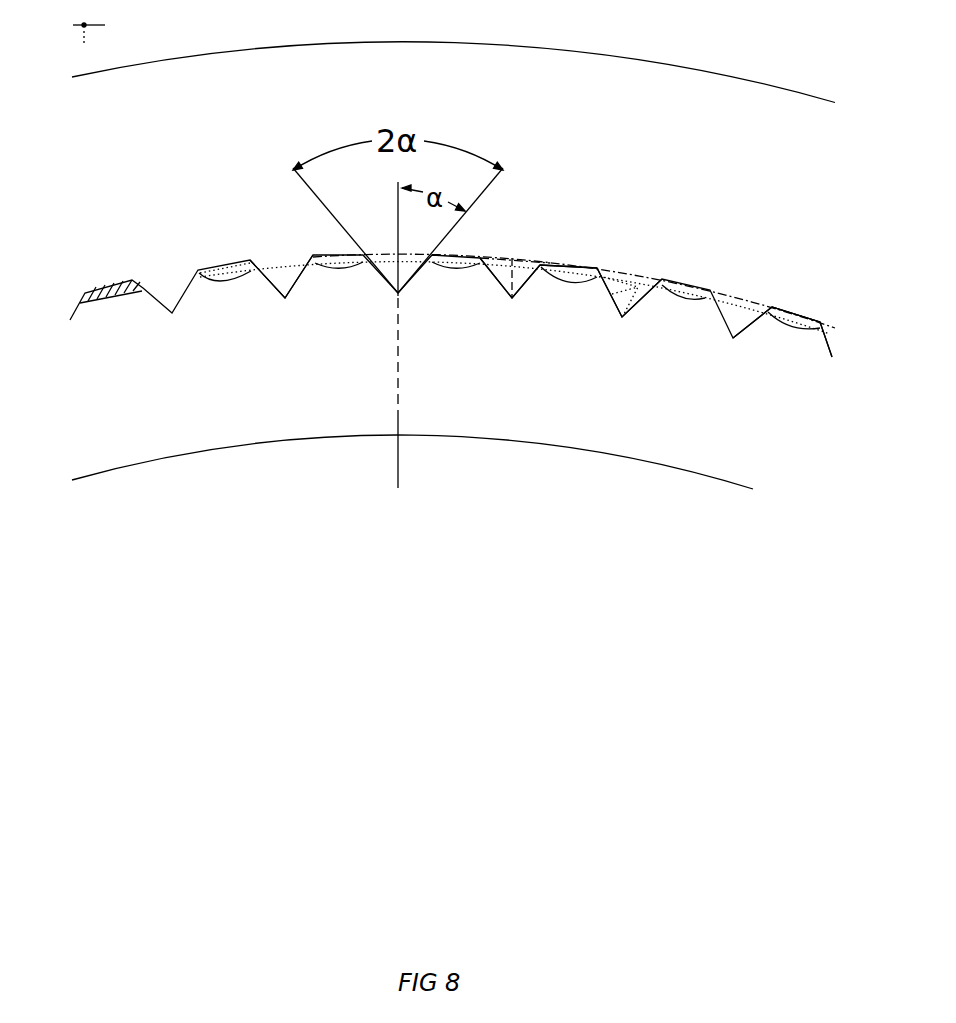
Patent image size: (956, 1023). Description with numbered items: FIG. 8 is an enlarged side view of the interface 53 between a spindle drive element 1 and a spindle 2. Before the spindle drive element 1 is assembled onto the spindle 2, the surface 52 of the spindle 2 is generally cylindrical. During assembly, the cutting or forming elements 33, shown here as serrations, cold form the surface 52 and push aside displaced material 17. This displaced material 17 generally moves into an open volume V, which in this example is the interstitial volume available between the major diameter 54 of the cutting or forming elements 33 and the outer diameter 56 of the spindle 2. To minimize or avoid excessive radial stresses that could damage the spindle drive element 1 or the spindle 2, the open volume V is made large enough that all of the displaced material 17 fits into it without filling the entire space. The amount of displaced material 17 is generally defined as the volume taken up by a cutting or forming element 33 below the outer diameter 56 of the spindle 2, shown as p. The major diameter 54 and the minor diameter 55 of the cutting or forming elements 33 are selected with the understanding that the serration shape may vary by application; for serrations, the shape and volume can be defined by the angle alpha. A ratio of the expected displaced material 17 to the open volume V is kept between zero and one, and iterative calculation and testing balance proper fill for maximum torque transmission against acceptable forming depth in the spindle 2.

The spindle drive element 1 is at (278, 74).
The spindle 2 is at (233, 412).
The displaced material 17 is at (256, 273).
The cutting or forming elements 33 is at (503, 296).
The surface 52 is at (795, 328).
The interface 53 is at (756, 322).
The major diameter 54 is at (593, 266).
The minor diameter 55 is at (286, 300).
The outer diameter 56 is at (569, 285).
The open volume V is at (80, 297).
The volume of displaced material p is at (619, 296).